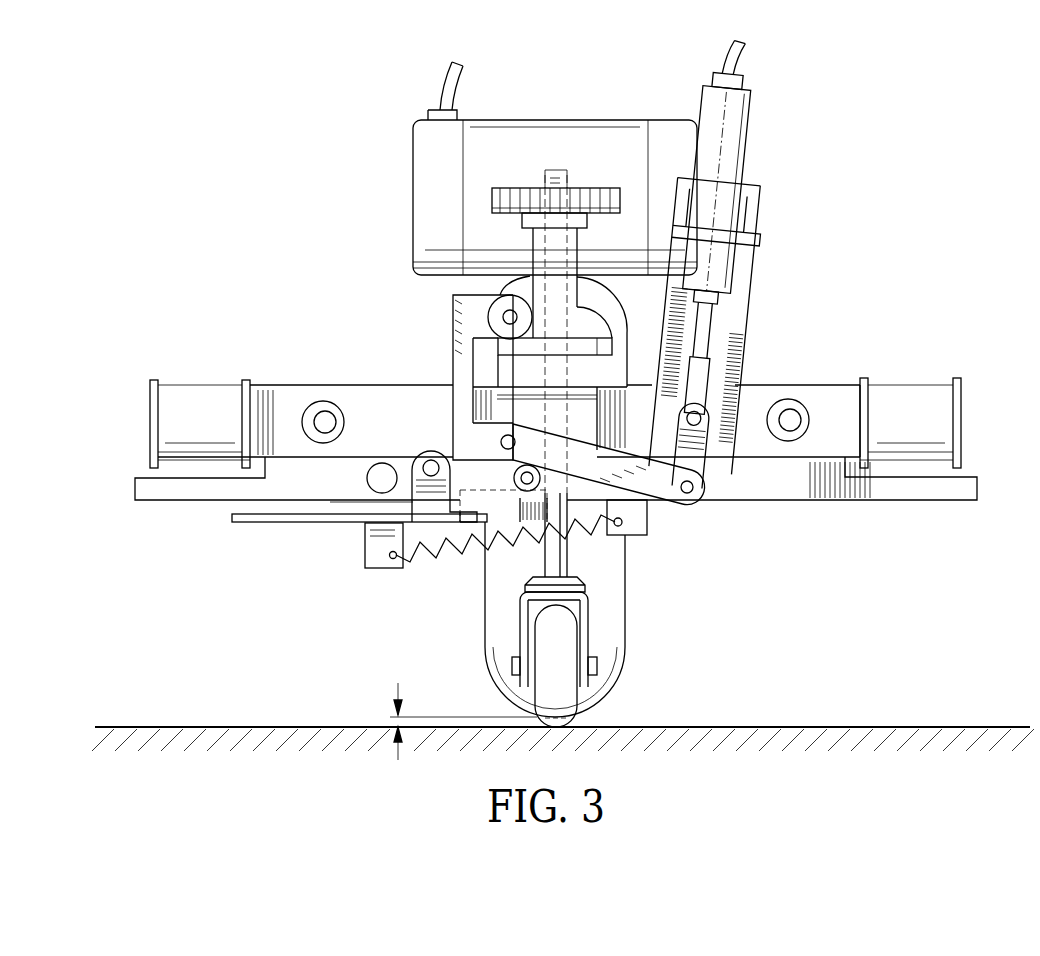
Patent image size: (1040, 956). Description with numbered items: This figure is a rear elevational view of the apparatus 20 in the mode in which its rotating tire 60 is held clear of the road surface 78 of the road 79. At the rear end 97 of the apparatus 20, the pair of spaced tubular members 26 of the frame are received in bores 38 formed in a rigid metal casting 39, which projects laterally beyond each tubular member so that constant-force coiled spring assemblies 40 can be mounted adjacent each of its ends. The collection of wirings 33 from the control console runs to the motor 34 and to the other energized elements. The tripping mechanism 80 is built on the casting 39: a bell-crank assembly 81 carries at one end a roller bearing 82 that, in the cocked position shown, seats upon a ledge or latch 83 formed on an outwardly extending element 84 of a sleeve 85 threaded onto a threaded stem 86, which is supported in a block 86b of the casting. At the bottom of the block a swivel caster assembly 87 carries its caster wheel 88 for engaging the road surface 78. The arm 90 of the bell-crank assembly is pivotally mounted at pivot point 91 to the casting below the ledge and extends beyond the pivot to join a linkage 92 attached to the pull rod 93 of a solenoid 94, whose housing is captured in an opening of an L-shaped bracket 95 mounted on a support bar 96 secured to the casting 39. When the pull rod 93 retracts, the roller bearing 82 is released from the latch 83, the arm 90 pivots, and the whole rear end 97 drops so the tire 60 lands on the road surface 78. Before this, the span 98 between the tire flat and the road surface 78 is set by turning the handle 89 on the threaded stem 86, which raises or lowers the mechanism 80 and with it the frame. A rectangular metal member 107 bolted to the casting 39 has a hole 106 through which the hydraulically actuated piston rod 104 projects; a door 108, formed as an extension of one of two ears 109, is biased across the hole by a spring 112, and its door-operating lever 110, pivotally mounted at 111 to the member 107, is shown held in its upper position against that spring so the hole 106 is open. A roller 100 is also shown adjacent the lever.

The apparatus 20 is at (283, 245).
The tubular members 26 is at (330, 402).
The collection of wirings 33 is at (445, 82).
The motor 34 is at (530, 120).
The bores 38 is at (316, 425).
The metal casting 39 is at (305, 385).
The constant-force coiled spring assemblies 40 is at (215, 382).
The tire 60 is at (628, 627).
The road surface 78 is at (725, 725).
The road 79 is at (845, 740).
The mechanism 80 is at (382, 336).
The bell-crank assembly 81 is at (453, 305).
The roller bearing 82 is at (488, 320).
The ledge or latch 83 is at (615, 327).
The outwardly extending element 84 is at (498, 347).
The sleeve 85 is at (580, 248).
The threaded stem 86 is at (567, 380).
The block 86b is at (597, 418).
The swivel caster assembly 87 is at (585, 585).
The caster wheel 88 is at (533, 640).
The handle 89 is at (590, 188).
The arm 90 is at (456, 393).
The pivot point 91 is at (501, 443).
The linkage 92 is at (705, 468).
The pull rod 93 is at (708, 332).
The solenoid 94 is at (750, 128).
The L-shaped bracket 95 is at (750, 240).
The support bar 96 is at (750, 312).
The rear end 97 is at (742, 567).
The span 98 is at (390, 717).
The follower roller 100 is at (372, 490).
The piston rod 104 is at (533, 478).
The hole 106 is at (514, 478).
The rectangular metal member 107 is at (185, 502).
The door 108 is at (520, 522).
The ears 109 is at (410, 473).
The door-operating lever 110 is at (285, 525).
The pivotal mount 111 is at (428, 460).
The spring 112 is at (452, 552).